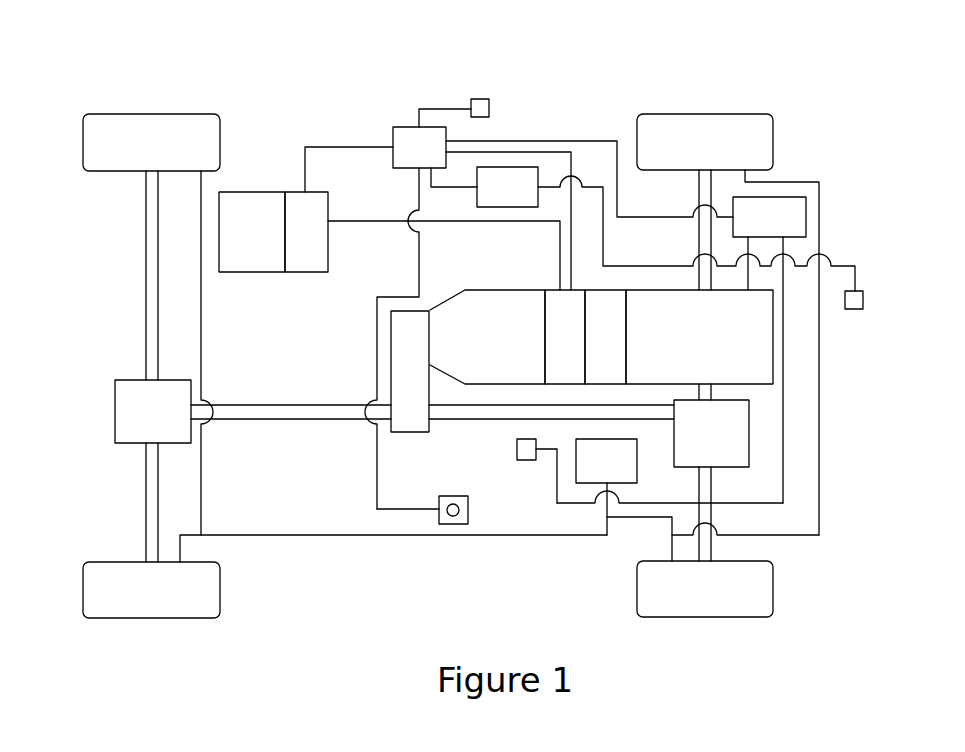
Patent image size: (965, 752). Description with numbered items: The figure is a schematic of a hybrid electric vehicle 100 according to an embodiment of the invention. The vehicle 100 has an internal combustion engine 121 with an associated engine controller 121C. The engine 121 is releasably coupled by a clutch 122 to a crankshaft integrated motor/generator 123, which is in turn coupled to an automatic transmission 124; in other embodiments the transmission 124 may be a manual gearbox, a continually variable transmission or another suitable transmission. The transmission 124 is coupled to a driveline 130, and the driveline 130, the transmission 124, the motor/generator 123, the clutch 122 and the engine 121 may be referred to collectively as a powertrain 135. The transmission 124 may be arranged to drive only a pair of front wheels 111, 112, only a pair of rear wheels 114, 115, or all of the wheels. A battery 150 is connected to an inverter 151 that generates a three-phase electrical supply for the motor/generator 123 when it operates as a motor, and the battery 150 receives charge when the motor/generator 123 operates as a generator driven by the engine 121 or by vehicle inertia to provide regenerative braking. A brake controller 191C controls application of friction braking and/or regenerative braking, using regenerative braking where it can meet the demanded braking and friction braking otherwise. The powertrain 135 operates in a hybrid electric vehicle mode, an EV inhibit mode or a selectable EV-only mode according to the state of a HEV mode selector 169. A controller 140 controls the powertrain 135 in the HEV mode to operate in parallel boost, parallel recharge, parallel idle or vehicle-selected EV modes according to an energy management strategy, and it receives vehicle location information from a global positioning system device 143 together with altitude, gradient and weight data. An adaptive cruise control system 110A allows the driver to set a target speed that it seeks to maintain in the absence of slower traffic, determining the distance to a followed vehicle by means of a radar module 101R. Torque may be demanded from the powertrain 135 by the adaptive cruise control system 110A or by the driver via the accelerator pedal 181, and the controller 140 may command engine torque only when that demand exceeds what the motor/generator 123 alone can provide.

The hybrid electric vehicle 100 is at (764, 83).
The radar module 101R is at (863, 300).
The adaptive cruise control system 110A is at (487, 198).
The front wheel 111 is at (690, 151).
The front wheel 112 is at (690, 599).
The rear wheel 114 is at (137, 151).
The rear wheel 115 is at (137, 599).
The internal combustion engine 121 is at (684, 346).
The engine controller 121C is at (749, 228).
The clutch 122 is at (590, 346).
The crankshaft integrated motor/generator 123 is at (550, 346).
The automatic transmission 124 is at (476, 346).
The driveline 130 is at (290, 453).
The powertrain 135 is at (852, 343).
The controller 140 is at (404, 158).
The global positioning system device 143 is at (489, 104).
The battery 150 is at (238, 243).
The inverter 151 is at (291, 243).
The HEV mode selector 169 is at (453, 524).
The accelerator pedal 181 is at (526, 460).
The brake controller 191C is at (587, 472).